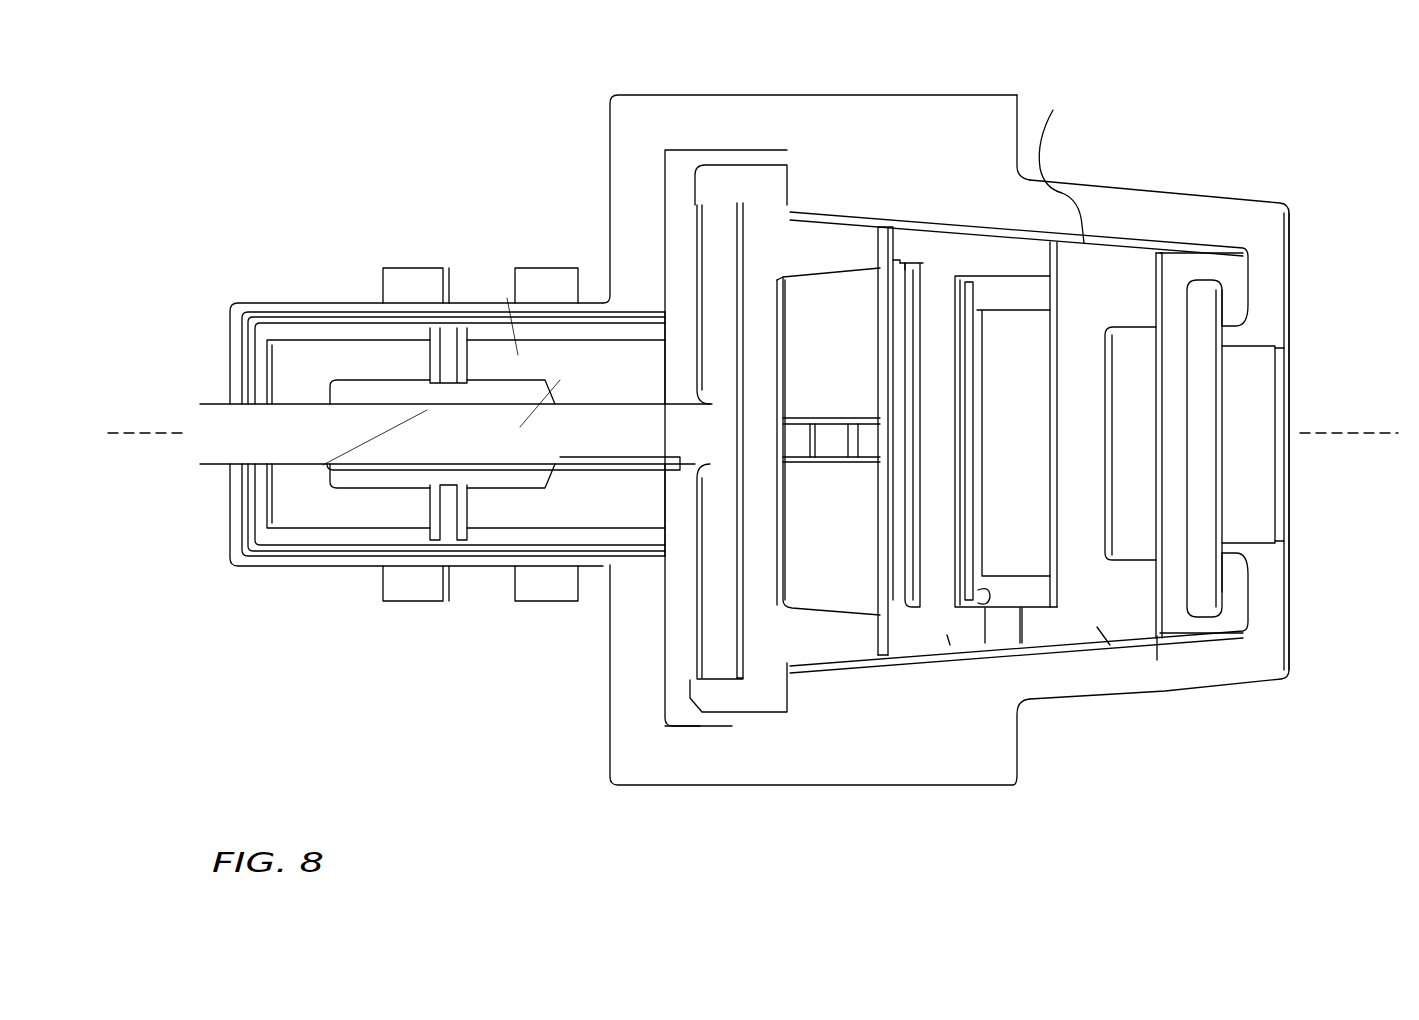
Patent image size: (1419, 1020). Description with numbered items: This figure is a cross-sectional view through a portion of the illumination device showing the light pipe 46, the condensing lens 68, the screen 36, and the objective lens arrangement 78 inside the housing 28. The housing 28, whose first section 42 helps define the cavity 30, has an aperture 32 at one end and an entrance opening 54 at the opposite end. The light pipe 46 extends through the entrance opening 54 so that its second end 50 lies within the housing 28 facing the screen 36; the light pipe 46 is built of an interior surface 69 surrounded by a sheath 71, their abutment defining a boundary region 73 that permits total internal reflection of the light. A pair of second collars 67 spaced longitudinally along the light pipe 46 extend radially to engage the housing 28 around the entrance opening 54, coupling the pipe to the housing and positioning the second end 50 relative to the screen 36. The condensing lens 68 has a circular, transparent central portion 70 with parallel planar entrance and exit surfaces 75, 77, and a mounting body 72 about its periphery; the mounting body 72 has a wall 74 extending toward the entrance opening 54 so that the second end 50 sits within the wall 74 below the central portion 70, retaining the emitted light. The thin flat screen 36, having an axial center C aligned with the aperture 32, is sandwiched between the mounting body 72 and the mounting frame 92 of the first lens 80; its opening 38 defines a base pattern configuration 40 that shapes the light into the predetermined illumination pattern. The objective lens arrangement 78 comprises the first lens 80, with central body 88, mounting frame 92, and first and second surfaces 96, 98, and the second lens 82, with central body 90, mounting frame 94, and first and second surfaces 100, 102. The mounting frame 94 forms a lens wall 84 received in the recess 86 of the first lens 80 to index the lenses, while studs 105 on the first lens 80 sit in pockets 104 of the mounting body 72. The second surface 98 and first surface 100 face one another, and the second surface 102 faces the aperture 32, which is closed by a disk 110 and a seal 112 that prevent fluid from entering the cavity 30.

The housing 28 is at (1082, 166).
The cavity 30 is at (1158, 660).
The aperture 32 is at (1286, 518).
The screen 36 is at (893, 657).
The opening 38 is at (877, 368).
The base pattern configuration 40 is at (880, 498).
The first section 42 is at (922, 125).
The light pipe 46 is at (220, 400).
The second end 50 is at (713, 343).
The entrance opening 54 is at (232, 452).
The second collar 67 is at (597, 353).
The condensing lens 68 is at (730, 712).
The interior surface 69 is at (280, 435).
The central portion 70 is at (717, 388).
The sheath 71 is at (310, 548).
The mounting body 72 is at (772, 177).
The boundary region 73 is at (316, 337).
The wall 74 is at (790, 642).
The entrance surface 75 is at (775, 485).
The exit surface 77 is at (782, 377).
The objective lens arrangement 78 is at (1018, 155).
The first lens 80 is at (947, 635).
The second lens 82 is at (1110, 645).
The lens wall 84 is at (1022, 643).
The recess 86 is at (985, 643).
The central body 88 is at (890, 227).
The central body 90 is at (1080, 398).
The mounting frame 92 is at (940, 233).
The mounting frame 94 is at (1152, 318).
The first surface 96 is at (917, 530).
The second surface 98 is at (965, 517).
The first surface 100 is at (1057, 405).
The second surface 102 is at (1058, 485).
The pockets 104 is at (793, 463).
The studs 105 is at (853, 455).
The disk 110 is at (1200, 447).
The seal 112 is at (1240, 243).
The axial center C is at (1350, 427).